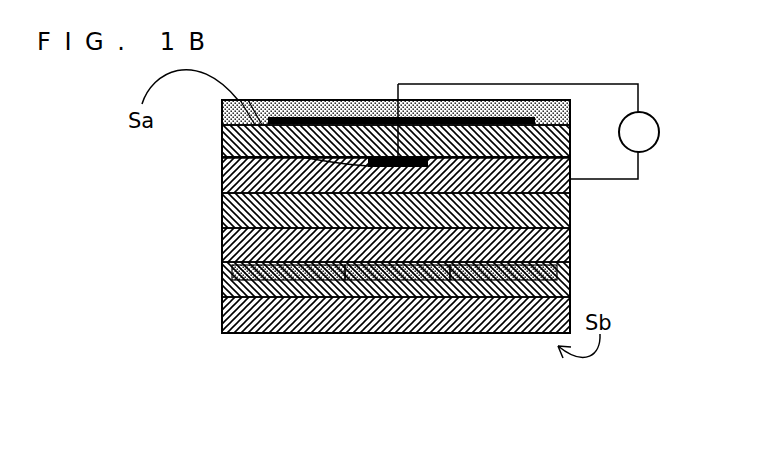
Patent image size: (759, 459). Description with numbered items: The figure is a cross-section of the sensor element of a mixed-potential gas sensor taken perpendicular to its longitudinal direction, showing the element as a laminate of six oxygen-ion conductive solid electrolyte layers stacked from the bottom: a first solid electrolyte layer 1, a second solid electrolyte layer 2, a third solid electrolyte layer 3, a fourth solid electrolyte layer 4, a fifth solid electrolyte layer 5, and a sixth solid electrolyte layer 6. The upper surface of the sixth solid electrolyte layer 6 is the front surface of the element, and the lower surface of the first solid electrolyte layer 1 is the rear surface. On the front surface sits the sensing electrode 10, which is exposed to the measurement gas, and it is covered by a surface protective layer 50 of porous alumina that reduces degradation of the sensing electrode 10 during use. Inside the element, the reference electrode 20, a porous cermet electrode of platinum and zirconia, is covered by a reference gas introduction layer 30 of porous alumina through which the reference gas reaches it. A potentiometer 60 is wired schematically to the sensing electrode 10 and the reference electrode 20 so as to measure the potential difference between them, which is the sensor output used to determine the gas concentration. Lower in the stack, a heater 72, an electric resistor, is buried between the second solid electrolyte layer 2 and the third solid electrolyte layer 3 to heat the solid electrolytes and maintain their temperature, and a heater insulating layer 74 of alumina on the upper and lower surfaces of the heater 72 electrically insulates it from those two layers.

The first solid electrolyte layer 1 is at (222, 317).
The second solid electrolyte layer 2 is at (222, 286).
The third solid electrolyte layer 3 is at (222, 244).
The fourth solid electrolyte layer 4 is at (222, 209).
The fifth solid electrolyte layer 5 is at (222, 174).
The sixth solid electrolyte layer 6 is at (222, 144).
The sensing electrode 10 is at (313, 100).
The reference electrode 20 is at (383, 84).
The reference gas introduction layer 30 is at (262, 136).
The surface protective layer 50 is at (222, 111).
The potentiometer 60 is at (654, 119).
The heater 72 is at (293, 281).
The heater insulating layer 74 is at (377, 281).